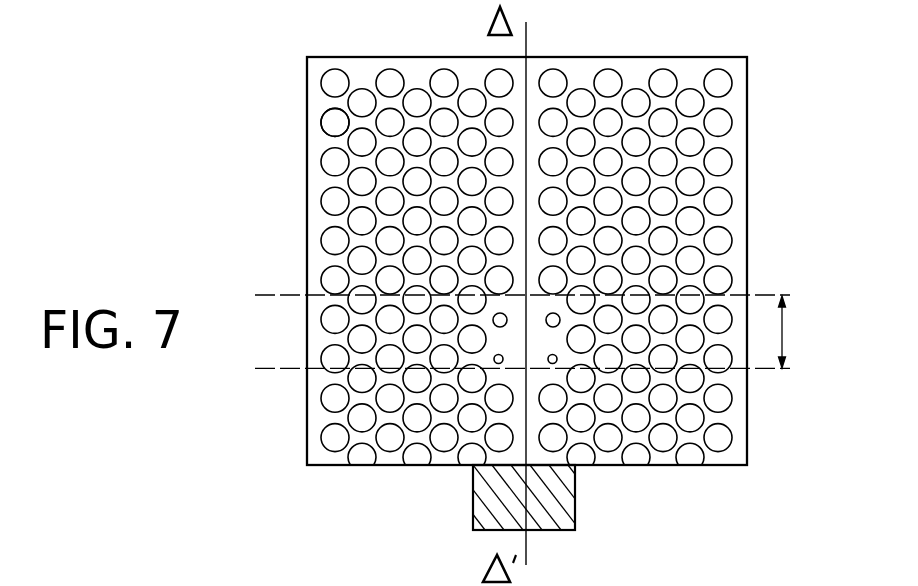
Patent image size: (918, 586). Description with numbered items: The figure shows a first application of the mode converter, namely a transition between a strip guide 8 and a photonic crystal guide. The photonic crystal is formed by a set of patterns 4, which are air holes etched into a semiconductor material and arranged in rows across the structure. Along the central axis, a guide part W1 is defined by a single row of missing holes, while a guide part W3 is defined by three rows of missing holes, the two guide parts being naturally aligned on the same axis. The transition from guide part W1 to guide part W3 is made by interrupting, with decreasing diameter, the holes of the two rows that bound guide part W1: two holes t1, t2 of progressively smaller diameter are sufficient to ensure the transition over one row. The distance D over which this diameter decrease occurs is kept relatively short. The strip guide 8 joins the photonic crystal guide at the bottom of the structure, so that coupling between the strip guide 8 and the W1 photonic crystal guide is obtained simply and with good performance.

The patterns 4 is at (337, 125).
The hole t1 is at (500, 320).
The hole t2 is at (502, 364).
The guide part W1 is at (535, 68).
The guide part W3 is at (543, 427).
The distance D is at (531, 331).
The strip guide 8 is at (490, 513).